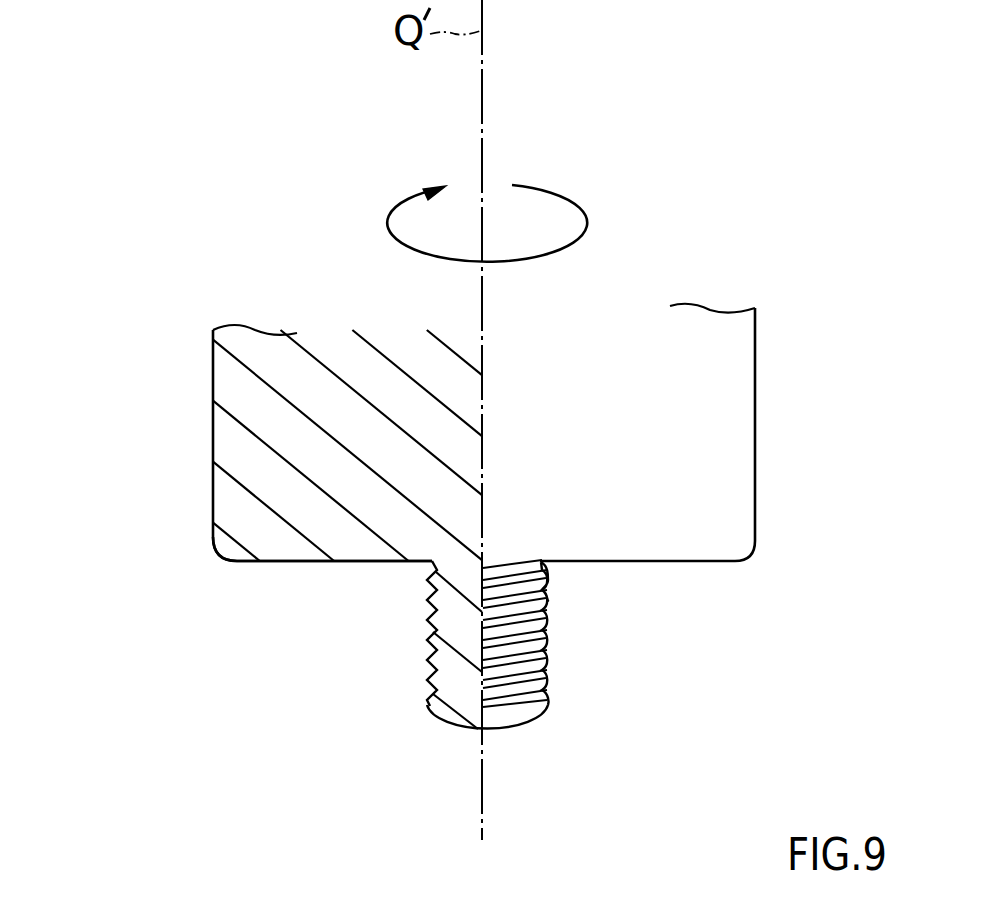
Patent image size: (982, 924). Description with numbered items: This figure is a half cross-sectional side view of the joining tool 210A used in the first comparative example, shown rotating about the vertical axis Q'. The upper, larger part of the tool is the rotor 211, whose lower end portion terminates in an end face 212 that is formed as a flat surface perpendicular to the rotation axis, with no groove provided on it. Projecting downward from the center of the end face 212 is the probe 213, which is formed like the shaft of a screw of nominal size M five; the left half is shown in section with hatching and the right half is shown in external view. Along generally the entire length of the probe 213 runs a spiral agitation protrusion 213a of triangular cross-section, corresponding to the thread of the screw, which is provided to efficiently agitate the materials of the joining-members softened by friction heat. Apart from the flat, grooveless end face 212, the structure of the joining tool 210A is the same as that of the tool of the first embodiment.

The joining tool 210A is at (205, 371).
The rotor 211 is at (222, 447).
The end face 212 is at (307, 561).
The probe 213 is at (455, 688).
The spiral agitation protrusion 213a is at (432, 633).